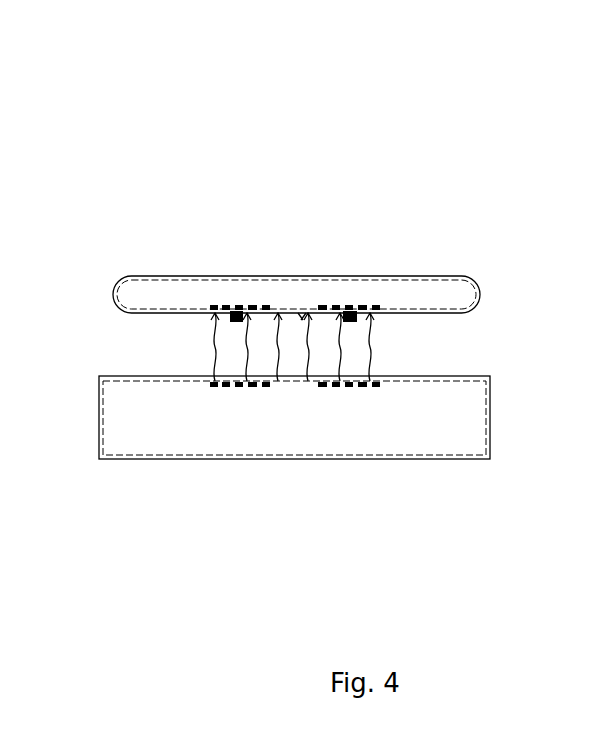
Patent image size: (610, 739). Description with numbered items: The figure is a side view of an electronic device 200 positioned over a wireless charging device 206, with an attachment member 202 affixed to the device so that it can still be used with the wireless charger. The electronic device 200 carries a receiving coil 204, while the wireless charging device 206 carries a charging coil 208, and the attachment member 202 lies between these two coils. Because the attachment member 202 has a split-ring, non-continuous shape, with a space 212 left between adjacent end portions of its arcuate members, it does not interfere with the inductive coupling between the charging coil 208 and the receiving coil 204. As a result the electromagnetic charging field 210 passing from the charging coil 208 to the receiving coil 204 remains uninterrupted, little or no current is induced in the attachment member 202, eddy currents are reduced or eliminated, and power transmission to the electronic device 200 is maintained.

The electronic device 200 is at (162, 276).
The attachment member 202 is at (352, 311).
The receiving coil 204 is at (228, 307).
The wireless charging device 206 is at (262, 450).
The charging coil 208 is at (338, 388).
The electromagnetic charging field 210 is at (368, 355).
The space 212 is at (301, 312).